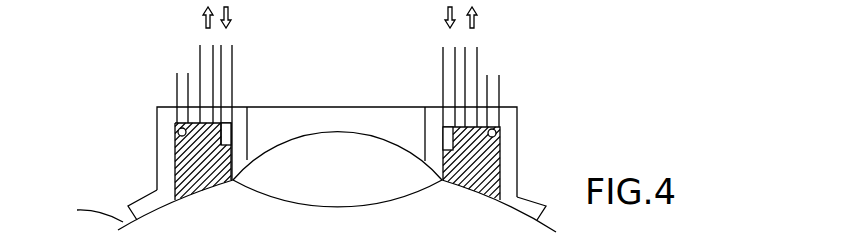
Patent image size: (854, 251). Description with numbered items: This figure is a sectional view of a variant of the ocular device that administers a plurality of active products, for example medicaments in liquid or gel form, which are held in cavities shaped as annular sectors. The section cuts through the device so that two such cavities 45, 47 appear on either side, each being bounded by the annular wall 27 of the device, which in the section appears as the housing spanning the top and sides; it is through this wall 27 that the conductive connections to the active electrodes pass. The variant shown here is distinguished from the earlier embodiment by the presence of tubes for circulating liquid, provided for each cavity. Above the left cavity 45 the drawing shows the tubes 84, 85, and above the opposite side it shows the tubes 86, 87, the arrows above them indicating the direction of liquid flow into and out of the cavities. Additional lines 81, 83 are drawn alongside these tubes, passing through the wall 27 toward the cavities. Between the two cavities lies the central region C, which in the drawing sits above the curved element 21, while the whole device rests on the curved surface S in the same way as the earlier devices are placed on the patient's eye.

The lens 21 is at (278, 206).
The annular wall 27 is at (510, 106).
The cavity 45 is at (193, 153).
The cavity 47 is at (480, 163).
The line 81 is at (177, 90).
The line 83 is at (499, 80).
The tube 84 is at (232, 58).
The tube 85 is at (200, 50).
The tube 86 is at (477, 48).
The tube 87 is at (443, 55).
The chamber C is at (362, 155).
The surface S is at (308, 196).